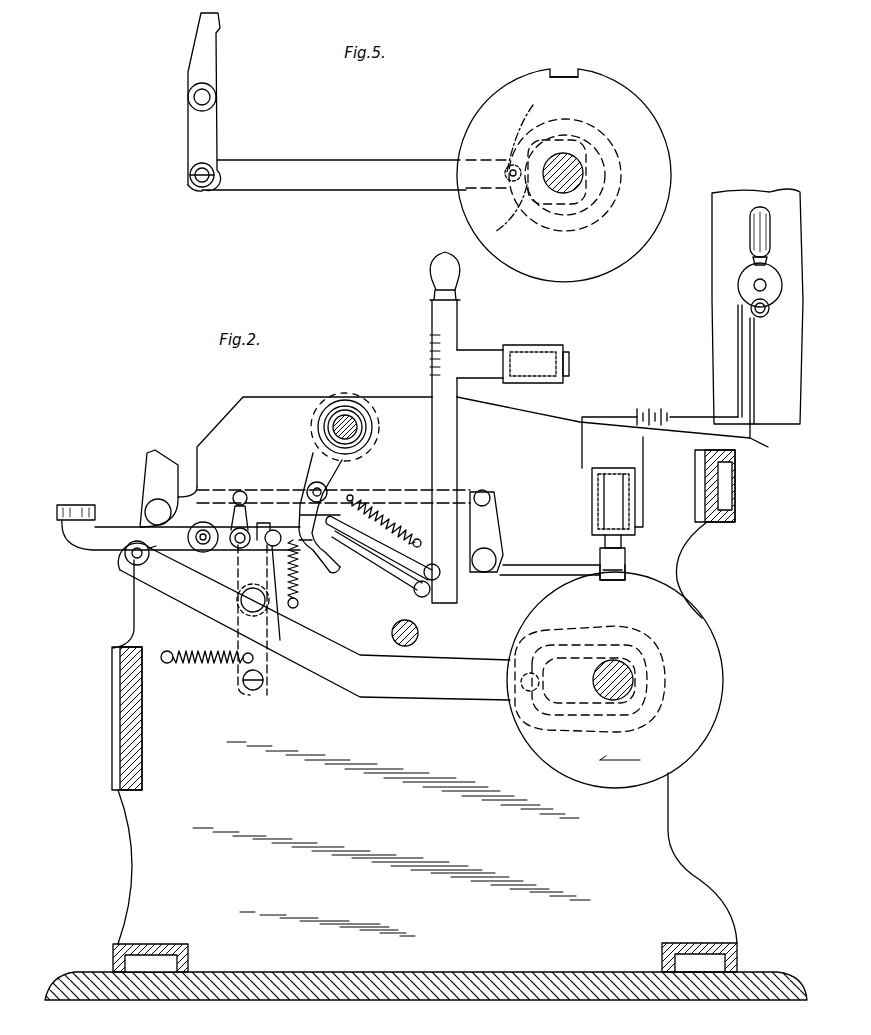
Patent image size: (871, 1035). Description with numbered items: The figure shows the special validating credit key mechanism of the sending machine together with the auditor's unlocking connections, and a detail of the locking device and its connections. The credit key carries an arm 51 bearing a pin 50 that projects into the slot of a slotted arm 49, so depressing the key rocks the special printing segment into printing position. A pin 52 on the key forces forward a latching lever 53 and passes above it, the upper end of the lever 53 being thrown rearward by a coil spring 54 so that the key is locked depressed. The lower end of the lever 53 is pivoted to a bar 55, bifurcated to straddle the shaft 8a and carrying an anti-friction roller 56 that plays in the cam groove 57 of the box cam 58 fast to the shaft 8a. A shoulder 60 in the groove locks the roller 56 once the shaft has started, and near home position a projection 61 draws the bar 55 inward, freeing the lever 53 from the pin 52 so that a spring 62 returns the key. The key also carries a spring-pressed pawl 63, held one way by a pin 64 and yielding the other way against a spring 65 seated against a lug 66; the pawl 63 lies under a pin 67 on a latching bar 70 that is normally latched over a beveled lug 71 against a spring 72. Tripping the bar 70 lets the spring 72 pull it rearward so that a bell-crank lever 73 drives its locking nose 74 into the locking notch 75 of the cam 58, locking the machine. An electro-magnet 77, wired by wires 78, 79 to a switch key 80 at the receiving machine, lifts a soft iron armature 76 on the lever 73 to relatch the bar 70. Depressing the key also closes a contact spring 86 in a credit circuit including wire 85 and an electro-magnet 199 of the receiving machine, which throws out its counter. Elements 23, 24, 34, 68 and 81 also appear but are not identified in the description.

In FIG. 5, the shaft 8a is at (563, 193).
In FIG. 2, the shaft 8a is at (635, 684).
In FIG. 2, the knob 23 is at (440, 262).
In FIG. 2, the rod 24 is at (430, 320).
In FIG. 2, the handle 34 is at (95, 548).
In FIG. 2, the slotted arm 49 is at (320, 433).
In FIG. 2, the pin 50 is at (355, 500).
In FIG. 2, the arm 51 is at (302, 512).
In FIG. 2, the pin 52 is at (272, 640).
In FIG. 5, the latching lever 53 is at (215, 48).
In FIG. 2, the latching lever 53 is at (257, 560).
In FIG. 2, the coil spring 54 is at (205, 667).
In FIG. 5, the bar 55 is at (268, 172).
In FIG. 2, the bar 55 is at (297, 688).
In FIG. 5, the anti-friction roller 56 is at (508, 165).
In FIG. 5, the cam groove 57 is at (575, 118).
In FIG. 5, the box cam 58 is at (650, 122).
In FIG. 5, the shoulder 60 is at (518, 200).
In FIG. 2, the shoulder 60 is at (205, 552).
In FIG. 5, the projection 61 is at (532, 115).
In FIG. 2, the spring 62 is at (318, 572).
In FIG. 2, the spring-pressed pawl 63 is at (227, 545).
In FIG. 2, the pin 64 is at (247, 520).
In FIG. 2, the spring 65 is at (236, 510).
In FIG. 2, the lug 66 is at (203, 537).
In FIG. 2, the pin 67 is at (240, 491).
In FIG. 2, the spring 68 is at (305, 590).
In FIG. 2, the latching bar 70 is at (392, 498).
In FIG. 2, the beveled lug 71 is at (210, 508).
In FIG. 2, the spring 72 is at (403, 530).
In FIG. 2, the bell-crank lever 73 is at (495, 524).
In FIG. 2, the locking nose 74 is at (606, 578).
In FIG. 5, the locking notch 75 is at (566, 68).
In FIG. 2, the locking notch 75 is at (620, 582).
In FIG. 2, the soft iron armature 76 is at (625, 555).
In FIG. 2, the electro-magnet 77 is at (598, 494).
In FIG. 2, the wire 78 is at (598, 417).
In FIG. 2, the wire 79 is at (767, 453).
In FIG. 2, the switch key 80 is at (750, 216).
In FIG. 2, the bar 81 is at (376, 548).
In FIG. 2, the wire 85 is at (458, 441).
In FIG. 2, the contact spring 86 is at (365, 580).
In FIG. 2, the electro-magnet 199 is at (533, 345).